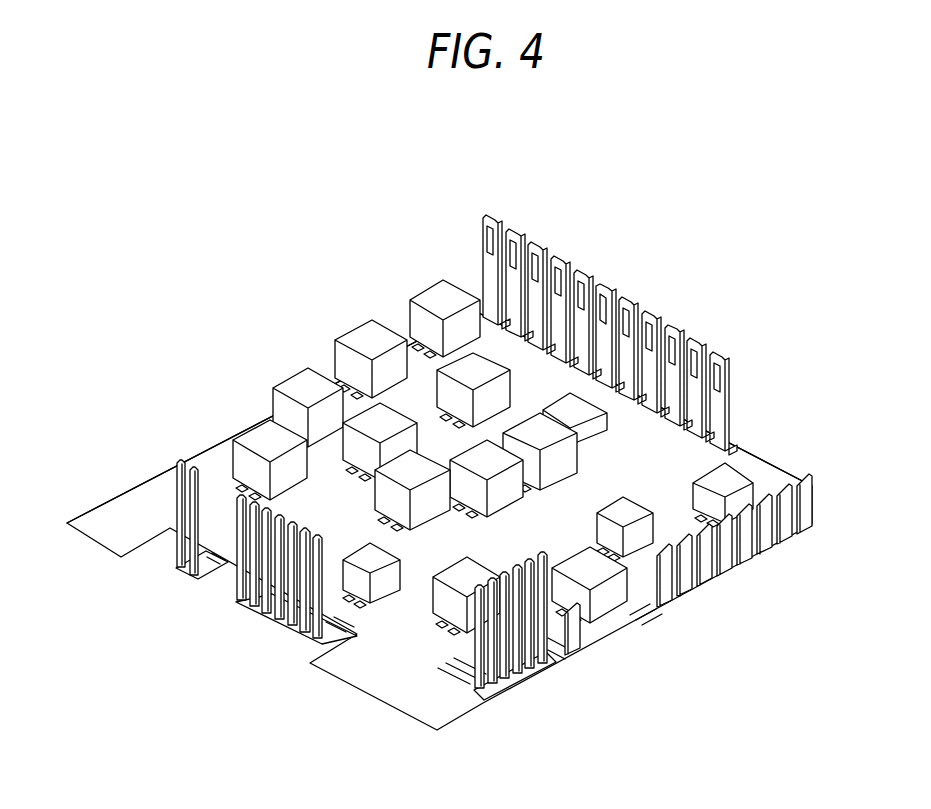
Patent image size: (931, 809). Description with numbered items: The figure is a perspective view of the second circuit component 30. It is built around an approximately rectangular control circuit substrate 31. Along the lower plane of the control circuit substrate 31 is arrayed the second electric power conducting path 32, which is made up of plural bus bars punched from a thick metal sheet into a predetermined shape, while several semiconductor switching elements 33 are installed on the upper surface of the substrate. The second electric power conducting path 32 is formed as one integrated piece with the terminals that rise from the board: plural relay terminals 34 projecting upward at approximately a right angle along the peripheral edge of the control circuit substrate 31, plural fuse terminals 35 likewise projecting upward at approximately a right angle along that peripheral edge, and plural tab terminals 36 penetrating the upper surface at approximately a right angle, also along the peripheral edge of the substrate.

The second circuit component 30 is at (647, 245).
The control circuit substrate 31 is at (678, 478).
The second electric power conducting path 32 is at (683, 601).
The semiconductor switching element 33 is at (295, 385).
The relay terminal 34 is at (178, 485).
The fuse terminal 35 is at (650, 316).
The tab terminal 36 is at (804, 498).